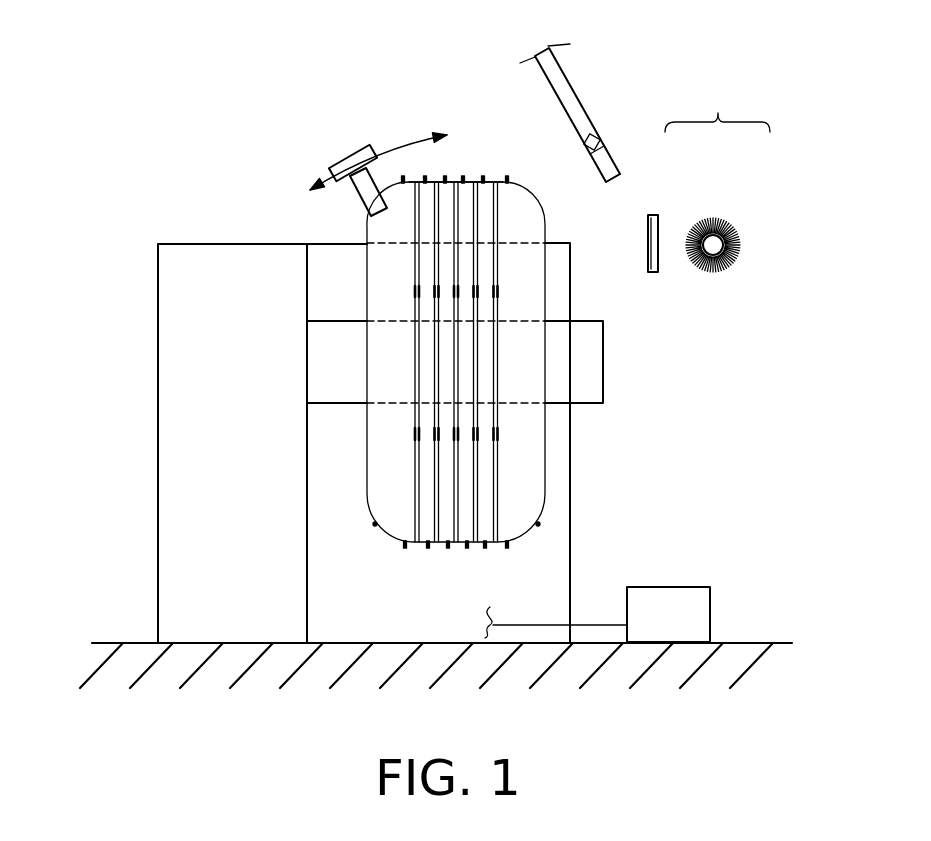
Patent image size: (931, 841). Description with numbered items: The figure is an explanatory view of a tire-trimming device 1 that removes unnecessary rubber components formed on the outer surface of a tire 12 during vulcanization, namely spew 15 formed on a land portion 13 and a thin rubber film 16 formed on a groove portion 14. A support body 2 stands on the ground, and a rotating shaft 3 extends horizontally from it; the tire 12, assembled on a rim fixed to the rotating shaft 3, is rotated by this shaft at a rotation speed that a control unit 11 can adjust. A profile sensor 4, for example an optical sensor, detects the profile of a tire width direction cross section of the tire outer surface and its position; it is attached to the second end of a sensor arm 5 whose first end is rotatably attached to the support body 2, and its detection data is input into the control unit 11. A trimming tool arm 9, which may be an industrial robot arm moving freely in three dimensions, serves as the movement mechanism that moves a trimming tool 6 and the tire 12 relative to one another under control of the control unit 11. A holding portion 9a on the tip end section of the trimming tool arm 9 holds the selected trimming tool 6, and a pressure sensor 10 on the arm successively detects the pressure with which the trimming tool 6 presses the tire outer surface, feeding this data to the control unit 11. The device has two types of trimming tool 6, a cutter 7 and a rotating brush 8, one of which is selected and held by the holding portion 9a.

The tire-trimming device 1 is at (300, 135).
The support body 2 is at (222, 255).
The rotating shaft 3 is at (604, 352).
The profile sensor 4 is at (348, 158).
The sensor arm 5 is at (355, 193).
The trimming tool 6 is at (718, 113).
The cutter 7 is at (658, 222).
The rotating brush 8 is at (737, 233).
The trimming tool arm 9 is at (568, 90).
The holding portion 9a is at (610, 177).
The pressure sensor 10 is at (597, 130).
The control unit 11 is at (665, 592).
The tire 12 is at (337, 467).
The land portion 13 is at (423, 547).
The groove portion 14 is at (477, 547).
The spew 15 is at (475, 181).
The thin rubber film 16 is at (415, 292).